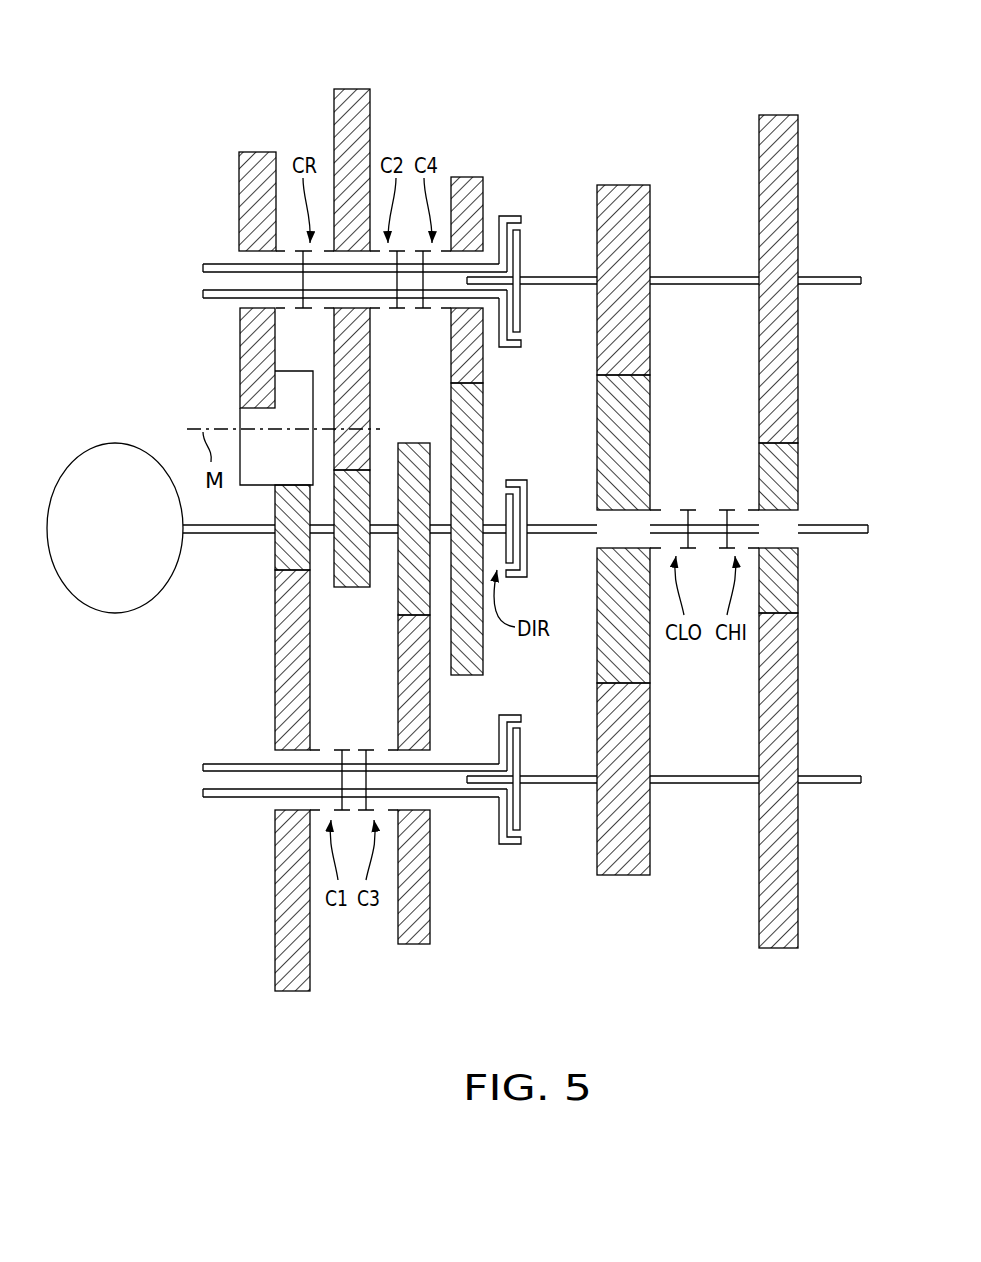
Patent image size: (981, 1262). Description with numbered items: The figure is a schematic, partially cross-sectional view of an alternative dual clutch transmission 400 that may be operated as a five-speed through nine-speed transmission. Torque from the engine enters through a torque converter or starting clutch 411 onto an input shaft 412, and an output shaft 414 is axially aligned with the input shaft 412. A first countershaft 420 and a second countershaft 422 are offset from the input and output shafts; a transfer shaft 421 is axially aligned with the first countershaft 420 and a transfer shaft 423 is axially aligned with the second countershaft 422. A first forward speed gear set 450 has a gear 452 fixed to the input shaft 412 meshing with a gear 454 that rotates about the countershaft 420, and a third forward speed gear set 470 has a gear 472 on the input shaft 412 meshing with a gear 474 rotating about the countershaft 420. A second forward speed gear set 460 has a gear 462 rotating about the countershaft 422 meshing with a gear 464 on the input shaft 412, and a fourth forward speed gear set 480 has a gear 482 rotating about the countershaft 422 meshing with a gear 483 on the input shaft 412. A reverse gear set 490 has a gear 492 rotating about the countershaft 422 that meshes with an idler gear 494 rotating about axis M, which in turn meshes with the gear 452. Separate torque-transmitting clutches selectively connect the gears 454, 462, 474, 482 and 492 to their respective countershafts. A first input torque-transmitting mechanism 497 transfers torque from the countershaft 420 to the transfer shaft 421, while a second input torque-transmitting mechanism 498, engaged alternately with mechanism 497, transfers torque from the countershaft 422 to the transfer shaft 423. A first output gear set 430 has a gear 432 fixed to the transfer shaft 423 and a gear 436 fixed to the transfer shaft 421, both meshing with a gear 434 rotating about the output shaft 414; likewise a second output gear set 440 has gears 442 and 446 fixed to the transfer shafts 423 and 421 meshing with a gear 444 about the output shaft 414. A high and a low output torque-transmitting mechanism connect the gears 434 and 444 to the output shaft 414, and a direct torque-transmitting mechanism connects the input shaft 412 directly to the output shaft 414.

The transmission 400 is at (153, 308).
The torque converter or starting clutch 411 is at (117, 614).
The input shaft 412 is at (205, 540).
The output shaft 414 is at (843, 536).
The first countershaft 420 is at (232, 797).
The transfer shaft 421 is at (851, 797).
The second countershaft 422 is at (213, 298).
The transfer shaft 423 is at (862, 289).
The first output gear set 430 is at (819, 493).
The gear 432 is at (798, 228).
The gear 434 is at (798, 477).
The gear 436 is at (798, 688).
The second output gear set 440 is at (664, 493).
The gear 442 is at (650, 228).
The gear 444 is at (650, 425).
The gear 446 is at (650, 713).
The first forward speed gear set 450 is at (251, 773).
The gear 452 is at (275, 546).
The gear 454 is at (275, 712).
The second forward speed gear set 460 is at (360, 331).
The gear 462 is at (370, 116).
The gear 464 is at (345, 588).
The third forward speed gear set 470 is at (432, 727).
The gear 472 is at (397, 607).
The gear 474 is at (430, 921).
The fourth forward speed gear set 480 is at (506, 386).
The gear 482 is at (483, 366).
The gear 483 is at (483, 440).
The reverse gear set 490 is at (217, 239).
The gear 492 is at (239, 200).
The idler gear 494 is at (293, 464).
The first input torque-transmitting mechanism 497 is at (528, 822).
The second input torque-transmitting mechanism 498 is at (530, 240).